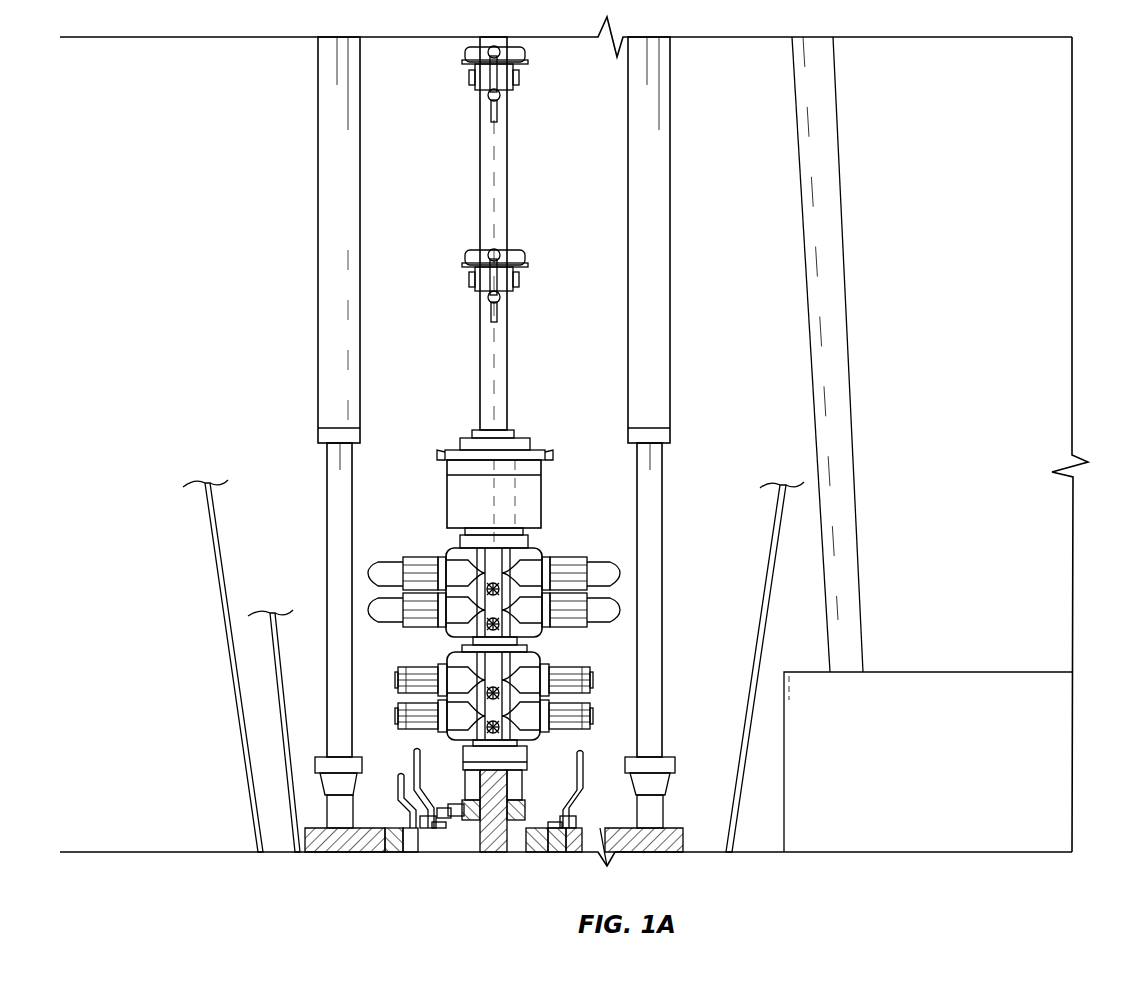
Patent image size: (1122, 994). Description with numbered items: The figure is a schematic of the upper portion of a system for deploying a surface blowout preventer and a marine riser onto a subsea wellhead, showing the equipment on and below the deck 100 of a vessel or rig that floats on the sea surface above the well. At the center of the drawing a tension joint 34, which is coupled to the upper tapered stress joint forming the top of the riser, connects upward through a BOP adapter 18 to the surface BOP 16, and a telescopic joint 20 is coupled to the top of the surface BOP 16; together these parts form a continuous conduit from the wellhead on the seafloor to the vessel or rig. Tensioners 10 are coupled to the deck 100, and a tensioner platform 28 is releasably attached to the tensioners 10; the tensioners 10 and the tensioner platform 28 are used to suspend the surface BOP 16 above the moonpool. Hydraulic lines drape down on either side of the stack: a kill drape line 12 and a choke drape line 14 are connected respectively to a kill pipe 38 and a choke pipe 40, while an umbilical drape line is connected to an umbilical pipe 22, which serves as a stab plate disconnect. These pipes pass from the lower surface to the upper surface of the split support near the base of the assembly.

The tensioners 10 is at (320, 290).
The kill drape line 12 is at (215, 550).
The choke drape line 14 is at (772, 566).
The surface BOP 16 is at (541, 504).
The BOP adapter 18 is at (530, 765).
The telescopic joint 20 is at (480, 345).
The umbilical pipe 22 is at (398, 782).
The tensioner platform 28 is at (312, 828).
The tension joint 34 is at (470, 808).
The kill pipe 38 is at (414, 770).
The choke pipe 40 is at (583, 768).
The deck 100 is at (1006, 637).